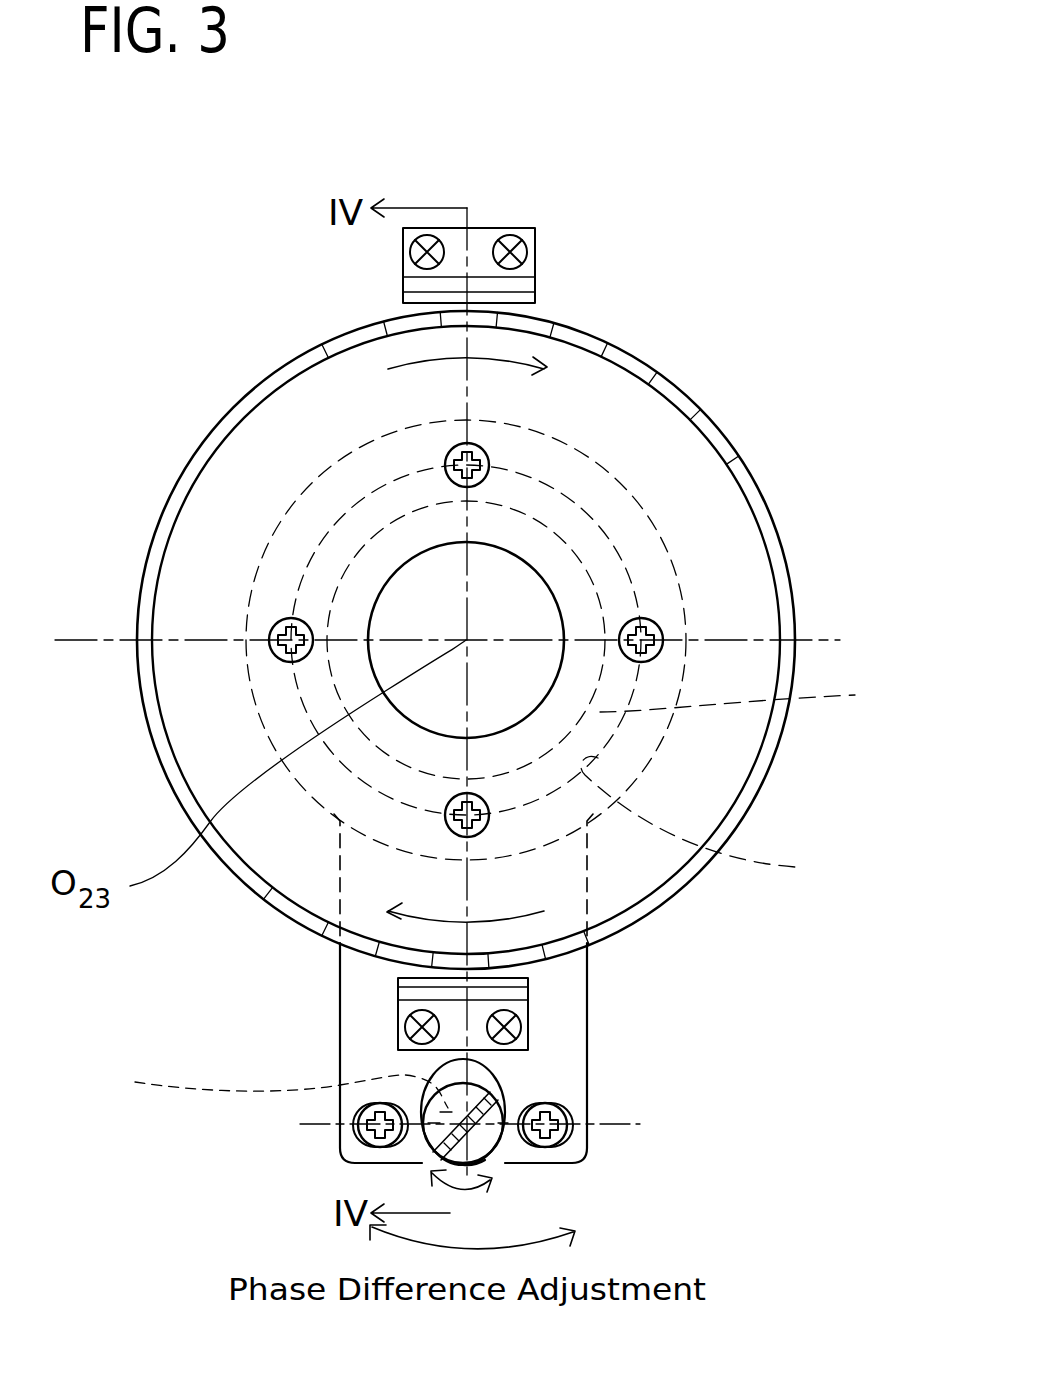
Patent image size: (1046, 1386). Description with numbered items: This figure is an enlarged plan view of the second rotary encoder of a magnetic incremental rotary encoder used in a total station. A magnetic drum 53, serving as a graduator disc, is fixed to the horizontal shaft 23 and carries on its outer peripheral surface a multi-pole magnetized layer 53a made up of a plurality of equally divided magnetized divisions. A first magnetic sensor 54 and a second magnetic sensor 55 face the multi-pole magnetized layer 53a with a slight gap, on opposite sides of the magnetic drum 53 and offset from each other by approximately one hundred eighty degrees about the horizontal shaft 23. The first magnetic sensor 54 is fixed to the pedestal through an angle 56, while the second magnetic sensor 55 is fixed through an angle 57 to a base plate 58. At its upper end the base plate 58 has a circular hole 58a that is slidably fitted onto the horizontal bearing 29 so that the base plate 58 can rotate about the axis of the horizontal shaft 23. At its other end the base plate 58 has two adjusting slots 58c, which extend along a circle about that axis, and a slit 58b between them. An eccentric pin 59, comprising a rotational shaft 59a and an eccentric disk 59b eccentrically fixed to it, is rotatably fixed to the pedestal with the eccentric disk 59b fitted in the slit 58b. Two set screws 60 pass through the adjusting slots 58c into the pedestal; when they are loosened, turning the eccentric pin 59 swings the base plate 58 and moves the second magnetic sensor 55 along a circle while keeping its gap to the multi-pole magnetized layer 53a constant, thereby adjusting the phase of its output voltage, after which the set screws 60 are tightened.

The horizontal shaft 23 is at (523, 618).
The horizontal bearing 29 is at (752, 706).
The magnetic drum 53 is at (720, 524).
The multi-pole magnetized layer 53a is at (723, 428).
The first magnetic sensor 54 is at (520, 288).
The second magnetic sensor 55 is at (400, 976).
The angle 56 is at (537, 233).
The angle 57 is at (392, 1013).
The base plate 58 is at (565, 1000).
The circular hole 58a is at (724, 816).
The slit 58b is at (500, 1067).
The adjusting slots 58c is at (340, 1125).
The eccentric pin 59 is at (482, 1150).
The rotational shaft 59a is at (261, 1083).
The eccentric disk 59b is at (493, 1158).
The set screws 60 is at (347, 1143).